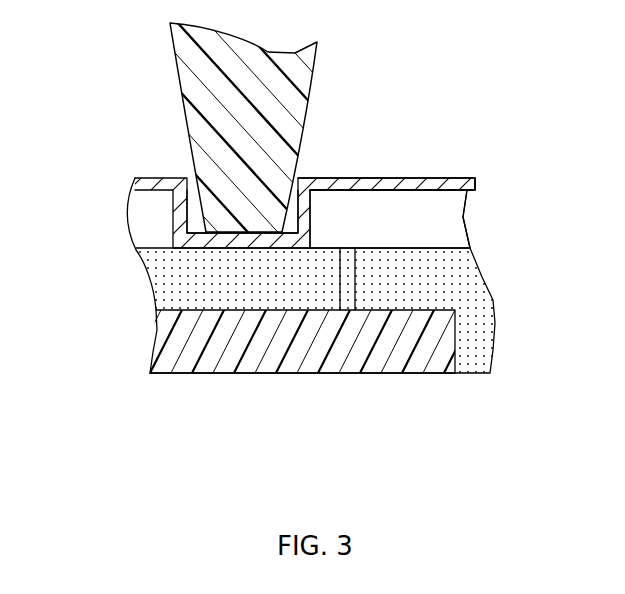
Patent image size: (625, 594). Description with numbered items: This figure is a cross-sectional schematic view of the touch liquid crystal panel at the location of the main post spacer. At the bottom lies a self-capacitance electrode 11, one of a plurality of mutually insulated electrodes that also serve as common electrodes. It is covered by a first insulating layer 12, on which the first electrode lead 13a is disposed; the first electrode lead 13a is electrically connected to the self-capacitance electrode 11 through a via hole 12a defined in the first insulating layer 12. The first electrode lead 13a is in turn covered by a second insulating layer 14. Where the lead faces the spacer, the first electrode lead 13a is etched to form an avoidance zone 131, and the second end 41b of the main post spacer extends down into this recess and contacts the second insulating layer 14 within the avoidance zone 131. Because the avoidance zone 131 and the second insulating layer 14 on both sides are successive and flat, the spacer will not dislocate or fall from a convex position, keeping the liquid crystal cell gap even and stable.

The self-capacitance electrode 11 is at (208, 355).
The first insulating layer 12 is at (475, 295).
The via hole 12a is at (347, 293).
The first electrode lead 13a is at (445, 225).
The avoidance zone 131 is at (200, 207).
The second insulating layer 14 is at (427, 186).
The second end of the main post spacer 41b is at (223, 223).